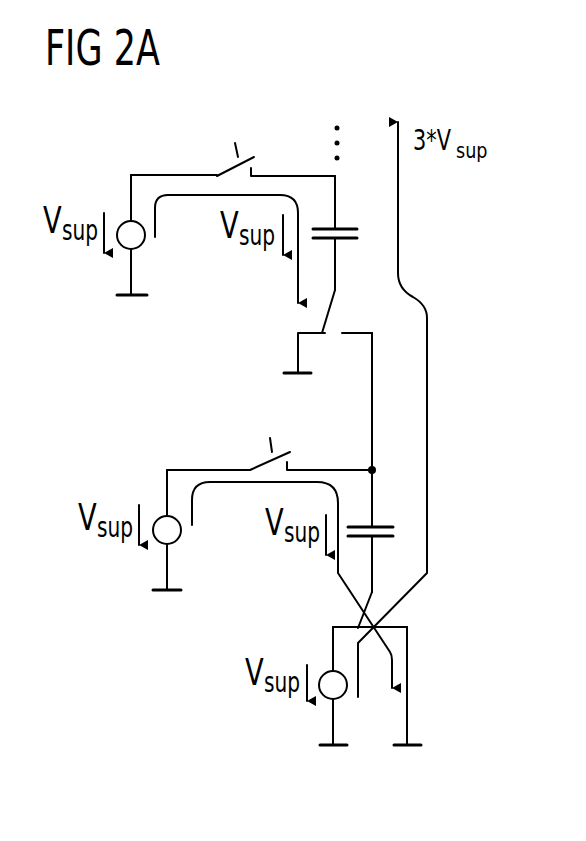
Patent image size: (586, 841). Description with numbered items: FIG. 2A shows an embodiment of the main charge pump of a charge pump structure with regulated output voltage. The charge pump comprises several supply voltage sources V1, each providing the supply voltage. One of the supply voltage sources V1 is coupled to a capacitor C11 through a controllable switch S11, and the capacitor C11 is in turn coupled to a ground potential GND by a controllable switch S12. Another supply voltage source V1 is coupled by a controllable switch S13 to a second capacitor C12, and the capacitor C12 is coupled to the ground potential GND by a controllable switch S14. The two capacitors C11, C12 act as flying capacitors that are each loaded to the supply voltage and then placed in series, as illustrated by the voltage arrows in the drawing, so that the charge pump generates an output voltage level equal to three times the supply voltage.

The controllable switch S11 is at (230, 168).
The controllable switch S12 is at (335, 316).
The controllable switch S13 is at (265, 465).
The controllable switch S14 is at (355, 625).
The capacitor C11 is at (345, 228).
The capacitor C12 is at (382, 525).
The supply voltage source V1 is at (121, 226).
The ground potential GND is at (353, 580).